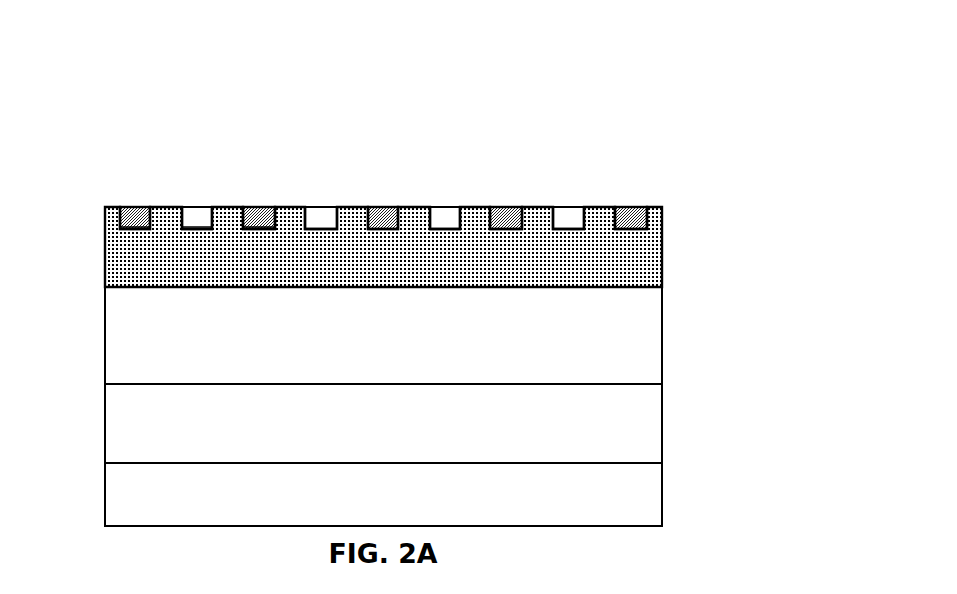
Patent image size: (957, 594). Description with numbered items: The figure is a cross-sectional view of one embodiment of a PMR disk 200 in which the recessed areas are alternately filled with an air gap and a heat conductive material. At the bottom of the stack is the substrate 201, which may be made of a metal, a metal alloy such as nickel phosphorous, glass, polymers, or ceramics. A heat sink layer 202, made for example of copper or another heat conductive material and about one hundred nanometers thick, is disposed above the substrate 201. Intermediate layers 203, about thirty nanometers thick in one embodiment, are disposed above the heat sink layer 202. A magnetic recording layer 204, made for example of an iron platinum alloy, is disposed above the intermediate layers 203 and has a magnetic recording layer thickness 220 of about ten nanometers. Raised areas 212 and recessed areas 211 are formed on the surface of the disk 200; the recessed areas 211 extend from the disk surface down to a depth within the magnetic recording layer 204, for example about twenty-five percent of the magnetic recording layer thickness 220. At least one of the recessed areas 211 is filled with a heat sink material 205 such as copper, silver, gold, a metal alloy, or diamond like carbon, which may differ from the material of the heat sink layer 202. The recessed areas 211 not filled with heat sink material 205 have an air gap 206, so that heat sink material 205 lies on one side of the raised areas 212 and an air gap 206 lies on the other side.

The PMR disk 200 is at (97, 528).
The substrate 201 is at (447, 505).
The heat sink layer 202 is at (478, 434).
The intermediate layers 203 is at (497, 346).
The magnetic recording layer 204 is at (525, 275).
The heat sink material 205 is at (383, 214).
The air gap 206 is at (318, 214).
The recessed areas 211 is at (260, 205).
The raised areas 212 is at (537, 193).
The magnetic recording layer thickness 220 is at (677, 288).